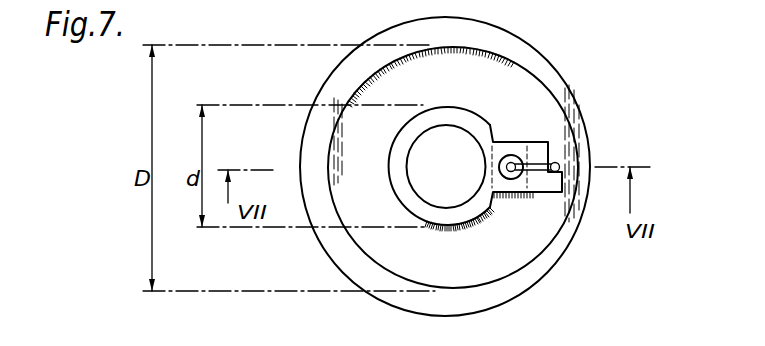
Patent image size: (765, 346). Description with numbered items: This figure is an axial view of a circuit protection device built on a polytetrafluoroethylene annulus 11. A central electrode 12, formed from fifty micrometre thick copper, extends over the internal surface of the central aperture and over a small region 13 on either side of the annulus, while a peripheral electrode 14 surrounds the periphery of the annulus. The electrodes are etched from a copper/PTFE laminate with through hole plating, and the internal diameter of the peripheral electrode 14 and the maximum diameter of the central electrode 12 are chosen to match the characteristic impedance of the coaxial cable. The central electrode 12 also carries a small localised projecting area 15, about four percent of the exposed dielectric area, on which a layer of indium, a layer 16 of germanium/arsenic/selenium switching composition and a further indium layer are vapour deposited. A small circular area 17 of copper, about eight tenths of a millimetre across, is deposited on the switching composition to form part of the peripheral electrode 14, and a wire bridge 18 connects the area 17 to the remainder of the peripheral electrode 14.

The polytetrafluoroethylene annulus 11 is at (310, 243).
The central electrode 12 is at (408, 159).
The small region 13 is at (428, 214).
The peripheral electrode 14 is at (338, 263).
The localised projecting area 15 is at (534, 193).
The layer of germanium/arsenic/selenium switching composition 16 is at (540, 132).
The small circular area 17 is at (507, 157).
The wire bridge 18 is at (556, 162).